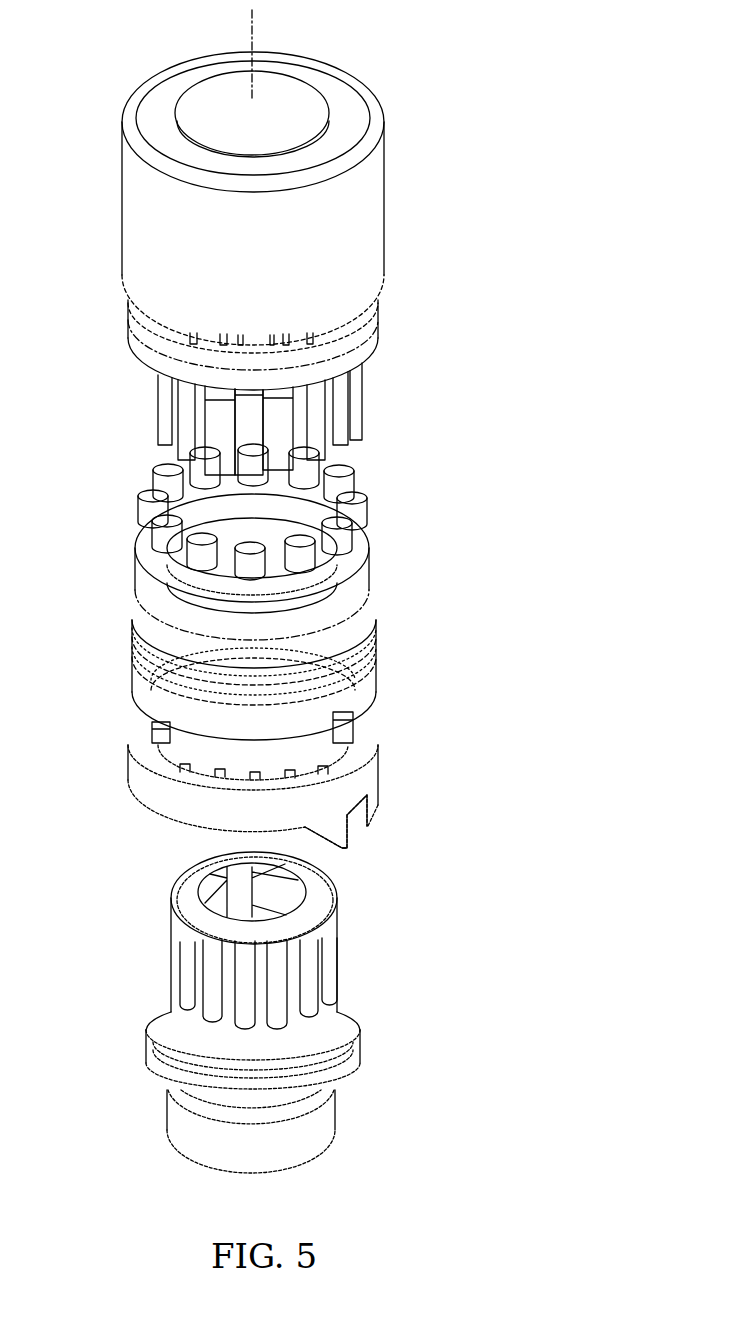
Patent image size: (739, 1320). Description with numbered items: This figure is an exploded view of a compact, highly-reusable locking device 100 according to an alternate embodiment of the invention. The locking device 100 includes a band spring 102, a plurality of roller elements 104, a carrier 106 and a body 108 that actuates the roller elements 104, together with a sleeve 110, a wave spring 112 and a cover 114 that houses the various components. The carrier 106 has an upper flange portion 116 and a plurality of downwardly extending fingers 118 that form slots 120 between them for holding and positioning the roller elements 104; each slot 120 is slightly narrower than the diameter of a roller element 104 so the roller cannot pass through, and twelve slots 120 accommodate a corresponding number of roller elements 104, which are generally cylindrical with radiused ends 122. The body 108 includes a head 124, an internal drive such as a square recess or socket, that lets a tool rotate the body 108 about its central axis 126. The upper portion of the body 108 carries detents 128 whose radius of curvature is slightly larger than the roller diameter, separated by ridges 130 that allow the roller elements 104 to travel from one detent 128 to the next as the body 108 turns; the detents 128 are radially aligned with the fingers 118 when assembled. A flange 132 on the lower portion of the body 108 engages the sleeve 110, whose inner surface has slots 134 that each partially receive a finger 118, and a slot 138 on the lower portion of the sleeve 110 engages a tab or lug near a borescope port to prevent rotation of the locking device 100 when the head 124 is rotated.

The locking device 100 is at (498, 160).
The band spring 102 is at (376, 581).
The roller elements 104 is at (352, 475).
The carrier 106 is at (367, 339).
The body 108 is at (368, 1032).
The sleeve 110 is at (377, 743).
The wave spring 112 is at (377, 664).
The cover 114 is at (385, 163).
The flange portion 116 is at (363, 348).
The fingers 118 is at (337, 412).
The slots 120 is at (300, 425).
The radiused ends 122 is at (368, 498).
The head 124 is at (262, 888).
The central axis 126 is at (255, 37).
The detents 128 is at (188, 962).
The ridges 130 is at (200, 998).
The flange 132 is at (150, 1062).
The slots 134 is at (152, 737).
The slot 138 is at (368, 825).